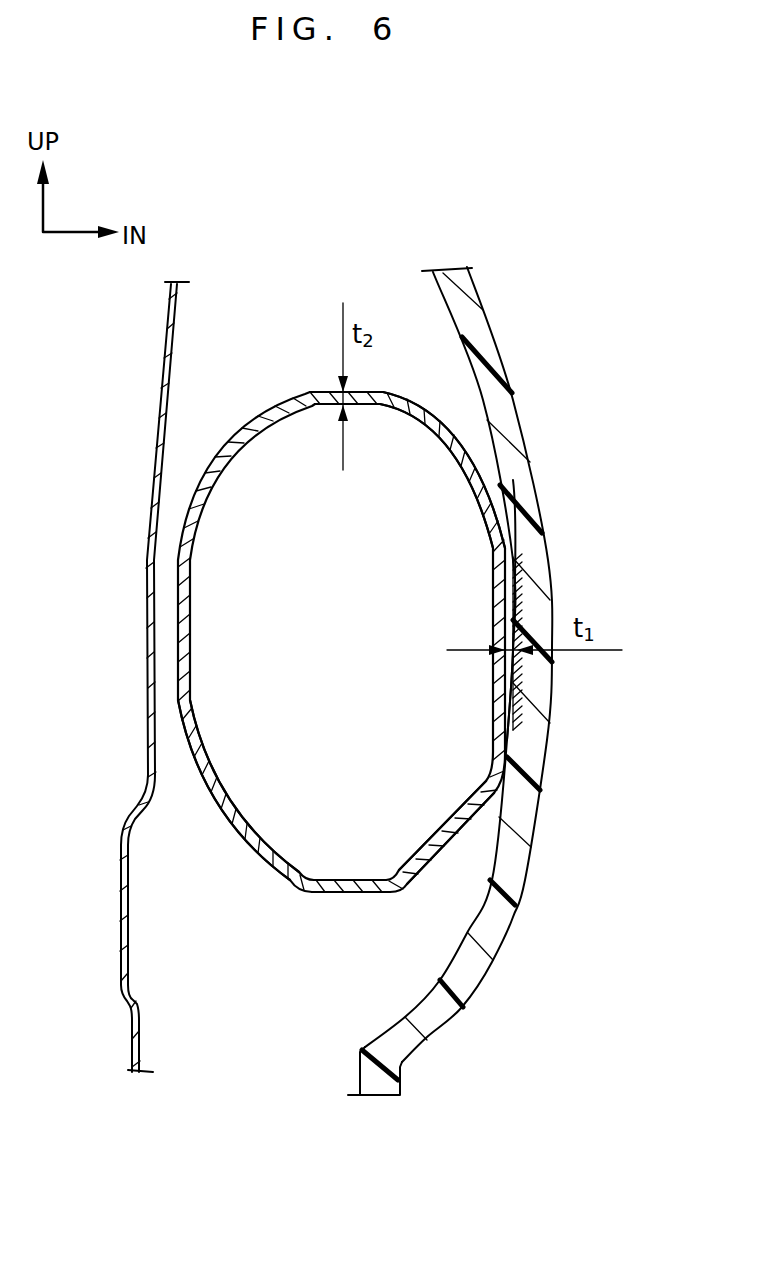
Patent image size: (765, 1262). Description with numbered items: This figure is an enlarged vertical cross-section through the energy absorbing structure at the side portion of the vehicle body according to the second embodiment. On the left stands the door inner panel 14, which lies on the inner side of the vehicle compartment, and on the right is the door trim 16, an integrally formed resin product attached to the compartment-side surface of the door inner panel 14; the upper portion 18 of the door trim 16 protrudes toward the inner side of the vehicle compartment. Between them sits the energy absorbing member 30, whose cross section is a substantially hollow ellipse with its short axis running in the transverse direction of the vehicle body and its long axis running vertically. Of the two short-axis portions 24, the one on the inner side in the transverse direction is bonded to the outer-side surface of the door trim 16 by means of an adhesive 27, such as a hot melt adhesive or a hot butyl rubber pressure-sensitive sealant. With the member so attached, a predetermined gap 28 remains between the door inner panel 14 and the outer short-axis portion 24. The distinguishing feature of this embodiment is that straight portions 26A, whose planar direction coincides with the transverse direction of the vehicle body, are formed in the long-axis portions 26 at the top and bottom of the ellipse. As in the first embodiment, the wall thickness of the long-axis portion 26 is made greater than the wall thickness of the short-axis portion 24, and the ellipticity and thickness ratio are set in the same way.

The door inner panel 14 is at (157, 488).
The door trim 16 is at (532, 416).
The upper portion 18 is at (528, 498).
The short-axis portion 24 is at (183, 656).
The long-axis portion 26 is at (383, 405).
The straight portion 26A is at (331, 405).
The adhesive 27 is at (520, 607).
The gap 28 is at (163, 617).
The energy absorbing member 30 is at (270, 882).